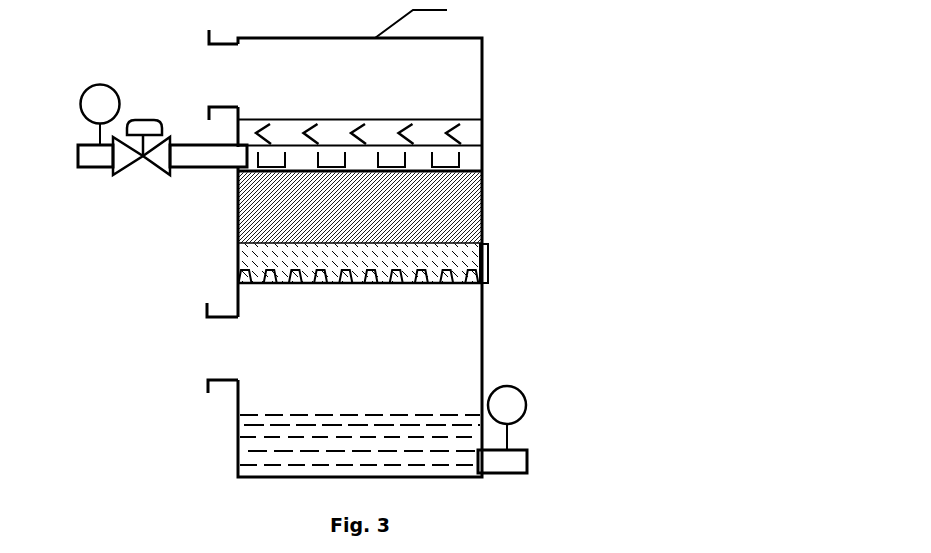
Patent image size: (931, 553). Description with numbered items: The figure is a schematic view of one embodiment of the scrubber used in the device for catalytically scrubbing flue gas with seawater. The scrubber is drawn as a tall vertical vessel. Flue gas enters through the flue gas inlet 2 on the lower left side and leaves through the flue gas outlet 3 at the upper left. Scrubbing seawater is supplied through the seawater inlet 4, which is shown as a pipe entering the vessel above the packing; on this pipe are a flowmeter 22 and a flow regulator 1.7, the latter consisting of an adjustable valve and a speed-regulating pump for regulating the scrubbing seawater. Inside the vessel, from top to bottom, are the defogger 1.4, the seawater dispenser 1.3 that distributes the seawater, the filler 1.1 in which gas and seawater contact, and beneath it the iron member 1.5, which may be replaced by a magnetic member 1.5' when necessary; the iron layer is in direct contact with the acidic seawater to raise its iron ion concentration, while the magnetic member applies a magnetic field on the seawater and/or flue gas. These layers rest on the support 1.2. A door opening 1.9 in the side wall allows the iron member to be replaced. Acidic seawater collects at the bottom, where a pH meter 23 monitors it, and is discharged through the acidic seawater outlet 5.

The flue gas outlet of the scrubber 3 is at (220, 62).
The seawater inlet of the scrubber 4 is at (227, 147).
The flowmeter 22 is at (100, 90).
The flow regulator 1.7 is at (155, 165).
The defogger 1.4 is at (472, 130).
The seawater dispenser 1.3 is at (477, 158).
The filler 1.1 is at (255, 232).
The iron member 1.5 is at (387, 236).
The magnetic member 1.5' is at (386, 249).
The support 1.2 is at (245, 278).
The door opening for replacing iron member 1.9 is at (483, 262).
The flue gas inlet of the scrubber 2 is at (218, 352).
The pH meter 23 is at (515, 393).
The acidic seawater outlet of the scrubber 5 is at (512, 458).